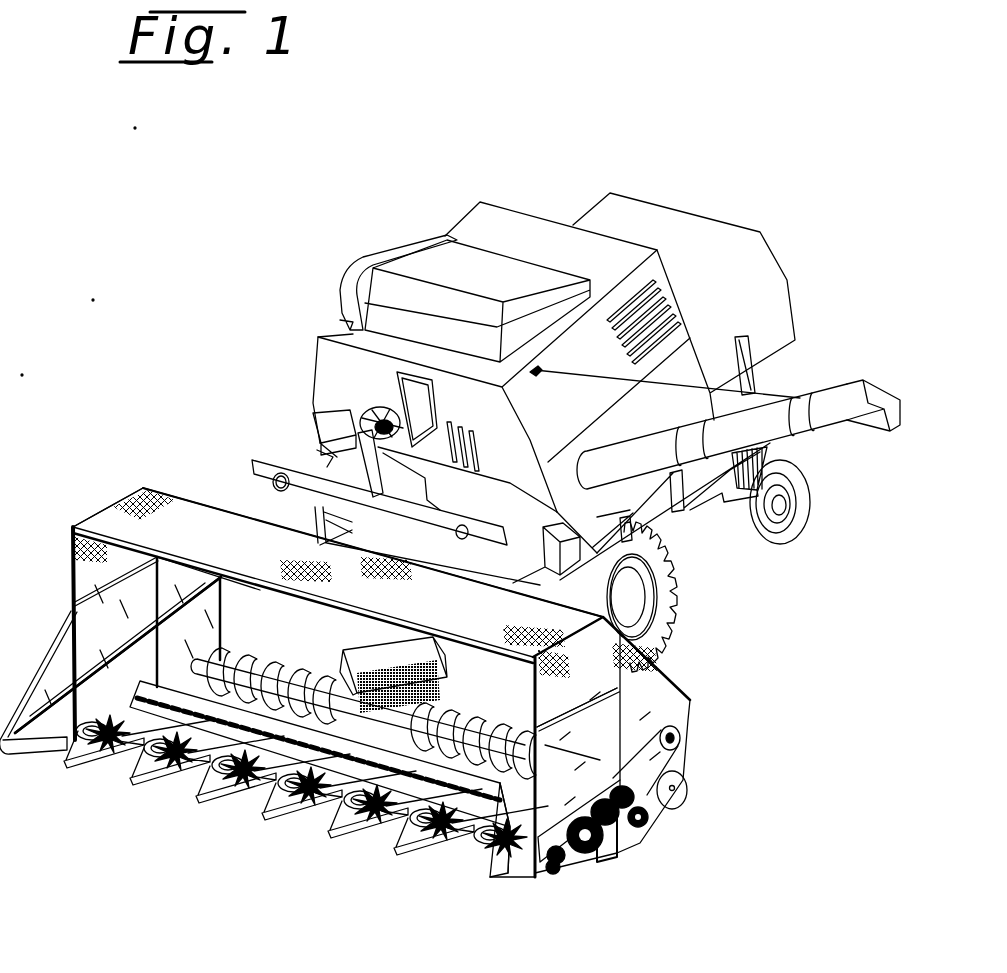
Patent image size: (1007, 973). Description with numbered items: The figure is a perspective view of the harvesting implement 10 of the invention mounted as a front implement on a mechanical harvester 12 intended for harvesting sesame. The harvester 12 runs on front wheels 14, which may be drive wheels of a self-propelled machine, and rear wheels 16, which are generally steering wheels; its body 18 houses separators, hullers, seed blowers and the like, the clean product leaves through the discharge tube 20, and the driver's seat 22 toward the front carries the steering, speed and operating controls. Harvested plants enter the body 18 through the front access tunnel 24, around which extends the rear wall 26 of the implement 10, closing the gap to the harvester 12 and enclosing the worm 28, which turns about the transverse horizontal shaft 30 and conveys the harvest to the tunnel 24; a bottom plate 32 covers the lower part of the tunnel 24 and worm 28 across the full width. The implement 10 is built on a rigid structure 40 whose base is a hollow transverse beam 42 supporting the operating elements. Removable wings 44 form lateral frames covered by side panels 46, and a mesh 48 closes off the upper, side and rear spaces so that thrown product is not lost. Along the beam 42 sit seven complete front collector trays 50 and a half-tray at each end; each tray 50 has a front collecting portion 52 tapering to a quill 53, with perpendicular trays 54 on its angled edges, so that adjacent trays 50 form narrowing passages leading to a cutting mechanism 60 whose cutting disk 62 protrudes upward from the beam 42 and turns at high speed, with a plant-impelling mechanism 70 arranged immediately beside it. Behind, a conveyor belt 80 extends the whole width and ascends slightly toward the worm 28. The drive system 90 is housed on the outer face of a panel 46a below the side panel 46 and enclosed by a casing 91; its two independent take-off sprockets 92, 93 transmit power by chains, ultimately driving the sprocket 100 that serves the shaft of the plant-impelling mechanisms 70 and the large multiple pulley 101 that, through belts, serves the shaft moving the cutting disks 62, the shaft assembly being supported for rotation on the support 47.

The harvesting implement 10 is at (695, 690).
The mechanical harvester 12 is at (805, 288).
The front wheels 14 is at (668, 594).
The rear steering wheel 16 is at (803, 510).
The body 18 is at (566, 411).
The discharge tube 20 is at (834, 394).
The driver's seat 22 is at (385, 412).
The front access tunnel 24 is at (410, 688).
The rear wall 26 is at (304, 632).
The worm 28 is at (318, 674).
The transverse horizontal shaft 30 is at (205, 655).
The bottom plate 32 is at (455, 735).
The rigid structure 40 is at (52, 622).
The hollow transverse beam 42 is at (400, 830).
The removable wings 44 is at (27, 692).
The side panels 46 is at (597, 736).
The panel 46a is at (510, 872).
The support 47 is at (621, 855).
The mesh 48 is at (128, 504).
The front collector trays 50 is at (67, 775).
The front collecting portion 52 is at (200, 798).
The quill 53 is at (262, 820).
The trays 54 is at (142, 785).
The cutting mechanism 60 is at (248, 800).
The cutting disk 62 is at (122, 772).
The plant-impelling mechanism 70 is at (300, 805).
The conveyor belt 80 is at (138, 668).
The drive system 90 is at (653, 843).
The casing 91 is at (590, 805).
The sprocket 92 is at (680, 735).
The sprocket 93 is at (687, 790).
The sprocket 100 is at (555, 880).
The multiple pulley 101 is at (594, 855).